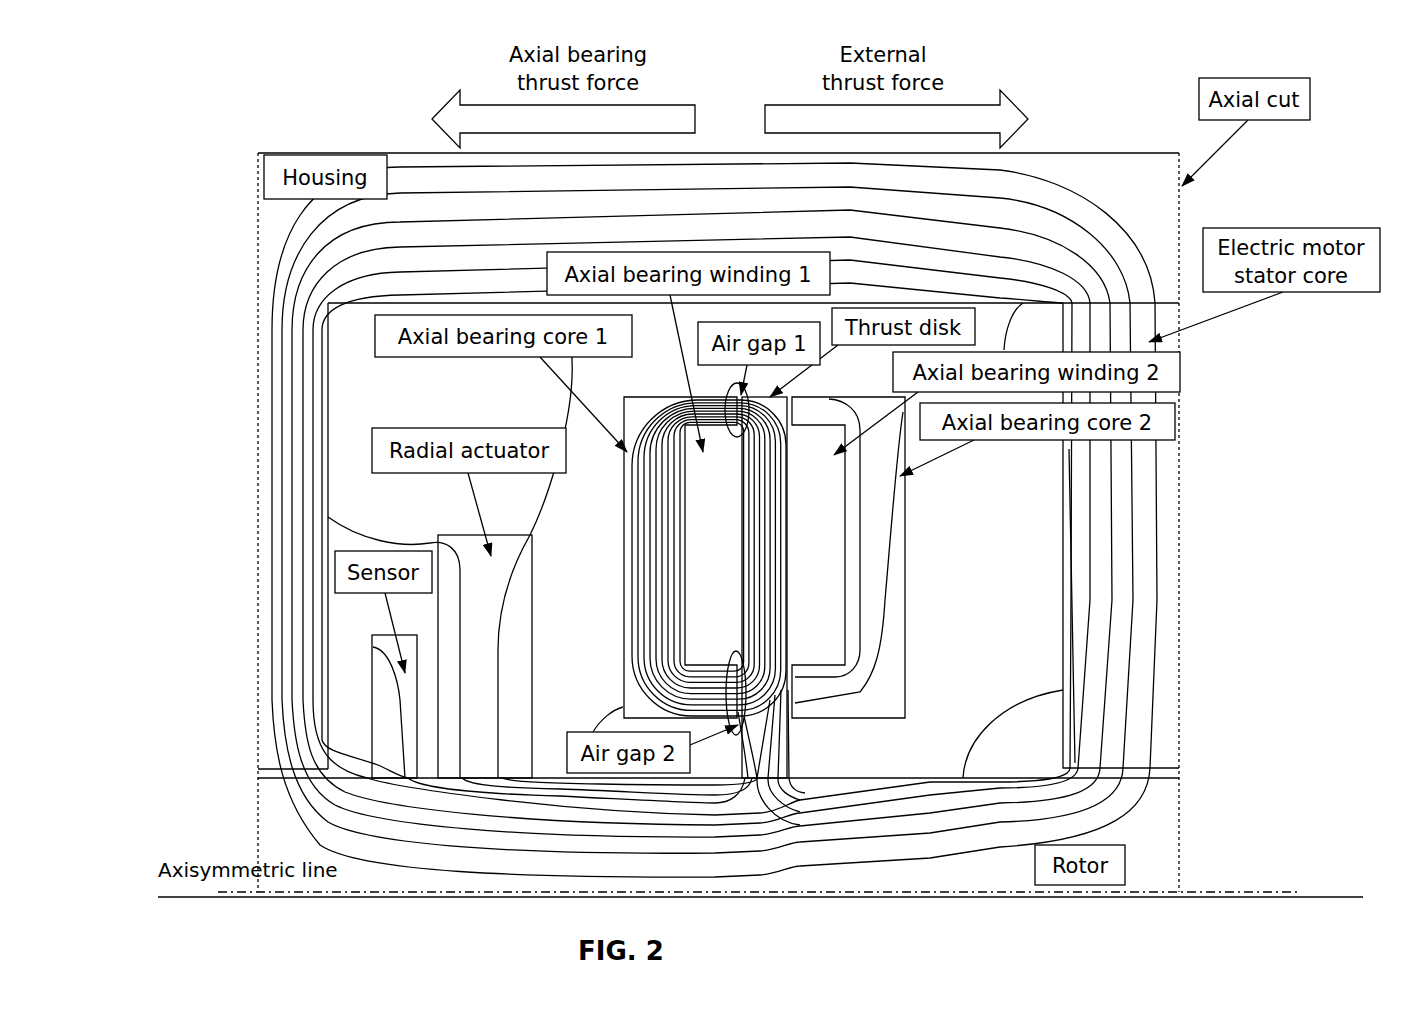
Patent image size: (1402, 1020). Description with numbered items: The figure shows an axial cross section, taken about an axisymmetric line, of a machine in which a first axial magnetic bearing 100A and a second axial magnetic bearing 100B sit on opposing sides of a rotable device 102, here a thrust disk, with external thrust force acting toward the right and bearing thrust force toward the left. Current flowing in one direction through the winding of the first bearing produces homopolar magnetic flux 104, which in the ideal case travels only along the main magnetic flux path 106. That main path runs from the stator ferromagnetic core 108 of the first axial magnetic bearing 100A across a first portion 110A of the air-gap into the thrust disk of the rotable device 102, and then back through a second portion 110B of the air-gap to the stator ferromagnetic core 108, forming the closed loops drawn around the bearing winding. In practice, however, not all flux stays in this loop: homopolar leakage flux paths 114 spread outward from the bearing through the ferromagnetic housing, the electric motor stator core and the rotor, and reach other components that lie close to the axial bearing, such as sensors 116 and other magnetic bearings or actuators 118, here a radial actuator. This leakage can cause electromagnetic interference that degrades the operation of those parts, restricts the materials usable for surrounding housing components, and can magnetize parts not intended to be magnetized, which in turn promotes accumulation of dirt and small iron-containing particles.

The first axial magnetic bearing 100A is at (630, 703).
The second axial magnetic bearing 100B is at (892, 705).
The rotable device 102 is at (1147, 850).
The magnetic flux 104 is at (645, 620).
The main magnetic flux path 106 is at (672, 397).
The stator ferromagnetic core 108 is at (633, 407).
The first portion of the air-gap 110A is at (775, 397).
The second portion of the air-gap 110B is at (745, 735).
The homopolar leakage flux paths 114 is at (998, 220).
The sensors 116 is at (382, 648).
The actuators 118 is at (460, 552).